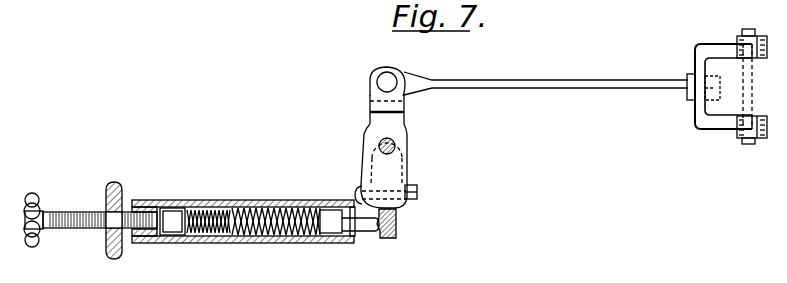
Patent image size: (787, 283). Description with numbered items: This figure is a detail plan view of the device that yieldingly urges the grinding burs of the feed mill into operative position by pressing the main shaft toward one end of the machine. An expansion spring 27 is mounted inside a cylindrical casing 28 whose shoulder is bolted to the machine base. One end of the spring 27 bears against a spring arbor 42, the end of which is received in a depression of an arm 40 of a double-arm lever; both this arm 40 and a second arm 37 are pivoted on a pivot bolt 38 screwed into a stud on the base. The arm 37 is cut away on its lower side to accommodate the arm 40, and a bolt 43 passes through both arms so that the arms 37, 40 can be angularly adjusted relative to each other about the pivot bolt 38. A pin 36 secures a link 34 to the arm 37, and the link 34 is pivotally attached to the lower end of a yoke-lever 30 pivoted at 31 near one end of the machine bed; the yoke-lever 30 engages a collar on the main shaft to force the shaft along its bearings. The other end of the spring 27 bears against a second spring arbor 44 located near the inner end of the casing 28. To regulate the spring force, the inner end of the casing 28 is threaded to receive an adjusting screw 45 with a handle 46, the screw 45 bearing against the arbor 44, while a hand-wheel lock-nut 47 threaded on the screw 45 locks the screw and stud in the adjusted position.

The expansion spring 27 is at (284, 208).
The cylindrical casing 28 is at (230, 193).
The yoke-lever 30 is at (706, 50).
The pivot 31 is at (748, 30).
The link 34 is at (518, 80).
The pin 36 is at (386, 78).
The arm 37 is at (396, 119).
The pivot bolt 38 is at (396, 148).
The arm 40 is at (397, 223).
The spring arbor 42 is at (350, 243).
The bolt 43 is at (360, 193).
The spring arbor 44 is at (173, 215).
The adjusting screw 45 is at (75, 212).
The handle 46 is at (36, 194).
The hand-wheel lock-nut 47 is at (117, 184).